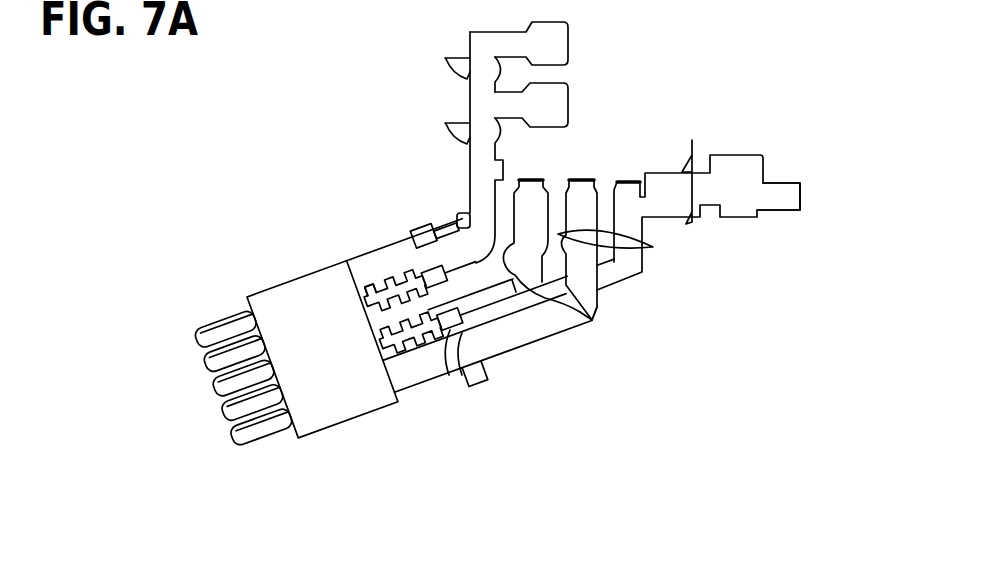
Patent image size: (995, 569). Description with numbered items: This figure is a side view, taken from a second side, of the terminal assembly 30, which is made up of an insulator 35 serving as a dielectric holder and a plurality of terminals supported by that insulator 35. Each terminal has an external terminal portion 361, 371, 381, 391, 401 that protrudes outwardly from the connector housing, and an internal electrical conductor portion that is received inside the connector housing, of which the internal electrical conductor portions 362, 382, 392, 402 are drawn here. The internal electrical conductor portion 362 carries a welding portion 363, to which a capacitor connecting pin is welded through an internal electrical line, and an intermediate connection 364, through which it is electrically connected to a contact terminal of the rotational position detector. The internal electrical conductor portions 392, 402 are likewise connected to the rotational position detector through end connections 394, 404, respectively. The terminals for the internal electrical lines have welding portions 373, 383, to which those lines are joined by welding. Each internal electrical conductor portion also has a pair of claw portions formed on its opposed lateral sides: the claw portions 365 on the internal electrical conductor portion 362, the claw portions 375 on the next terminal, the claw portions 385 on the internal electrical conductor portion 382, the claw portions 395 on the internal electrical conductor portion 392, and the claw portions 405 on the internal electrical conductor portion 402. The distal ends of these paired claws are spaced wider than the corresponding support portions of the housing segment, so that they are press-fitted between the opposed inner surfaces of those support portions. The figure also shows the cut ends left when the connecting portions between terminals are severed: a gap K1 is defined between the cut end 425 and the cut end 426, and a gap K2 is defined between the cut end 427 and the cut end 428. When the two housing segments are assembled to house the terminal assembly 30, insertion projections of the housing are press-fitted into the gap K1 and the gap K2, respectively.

The terminal assembly 30 is at (280, 151).
The insulator 35 is at (352, 412).
The external terminal portion 361 is at (222, 416).
The internal electrical conductor portion 362 is at (628, 272).
The welding portion 363 is at (738, 210).
The intermediate connection 364 is at (628, 181).
The claw portions 365 is at (699, 165).
The external terminal portion 371 is at (205, 367).
The welding portion 373 is at (570, 97).
The claw portions 375 is at (446, 123).
The external terminal portion 381 is at (197, 341).
The internal electrical conductor portion 382 is at (471, 190).
The welding portion 383 is at (570, 33).
The claw portions 385 is at (446, 58).
The external terminal portion 391 is at (232, 440).
The internal electrical conductor portion 392 is at (565, 336).
The end connection 394 is at (586, 178).
The claw portions 395 is at (633, 246).
The external terminal portion 401 is at (213, 392).
The internal electrical conductor portion 402 is at (516, 292).
The end connection 404 is at (529, 178).
The claw portions 405 is at (594, 321).
The cut end 425 is at (427, 342).
The cut end 426 is at (377, 340).
The cut end 427 is at (416, 230).
The cut end 428 is at (402, 272).
The gap K1 is at (376, 280).
The gap K2 is at (393, 364).